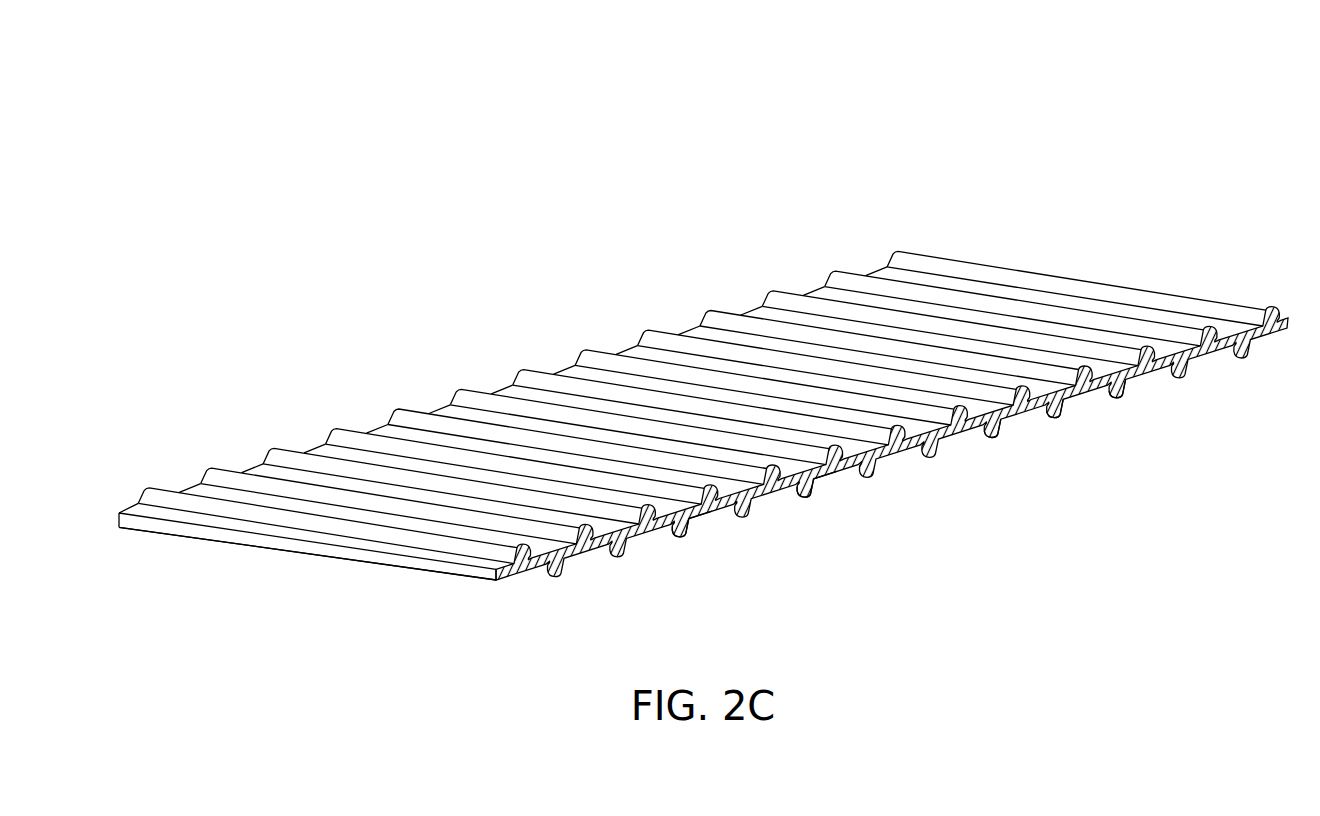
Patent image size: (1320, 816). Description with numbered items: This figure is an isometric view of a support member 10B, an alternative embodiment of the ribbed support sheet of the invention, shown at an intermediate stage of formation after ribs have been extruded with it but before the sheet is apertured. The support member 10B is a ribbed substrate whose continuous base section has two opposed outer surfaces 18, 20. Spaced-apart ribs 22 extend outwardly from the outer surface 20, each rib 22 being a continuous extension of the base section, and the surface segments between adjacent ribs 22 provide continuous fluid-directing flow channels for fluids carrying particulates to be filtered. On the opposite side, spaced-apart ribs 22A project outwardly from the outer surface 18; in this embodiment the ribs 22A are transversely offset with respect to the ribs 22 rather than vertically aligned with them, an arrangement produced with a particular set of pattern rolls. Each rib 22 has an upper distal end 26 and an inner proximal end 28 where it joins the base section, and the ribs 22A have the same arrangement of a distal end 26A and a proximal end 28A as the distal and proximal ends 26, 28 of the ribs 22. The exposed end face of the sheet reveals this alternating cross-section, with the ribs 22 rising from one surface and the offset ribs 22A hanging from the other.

The support member 10B is at (925, 247).
The outer surface 18 is at (516, 592).
The outer surface 20 is at (434, 402).
The ribs 22 is at (528, 374).
The distal end 26 is at (339, 434).
The proximal end 28 is at (325, 446).
The ribs 22A is at (991, 435).
The distal end 26A is at (680, 538).
The proximal end 28A is at (690, 527).